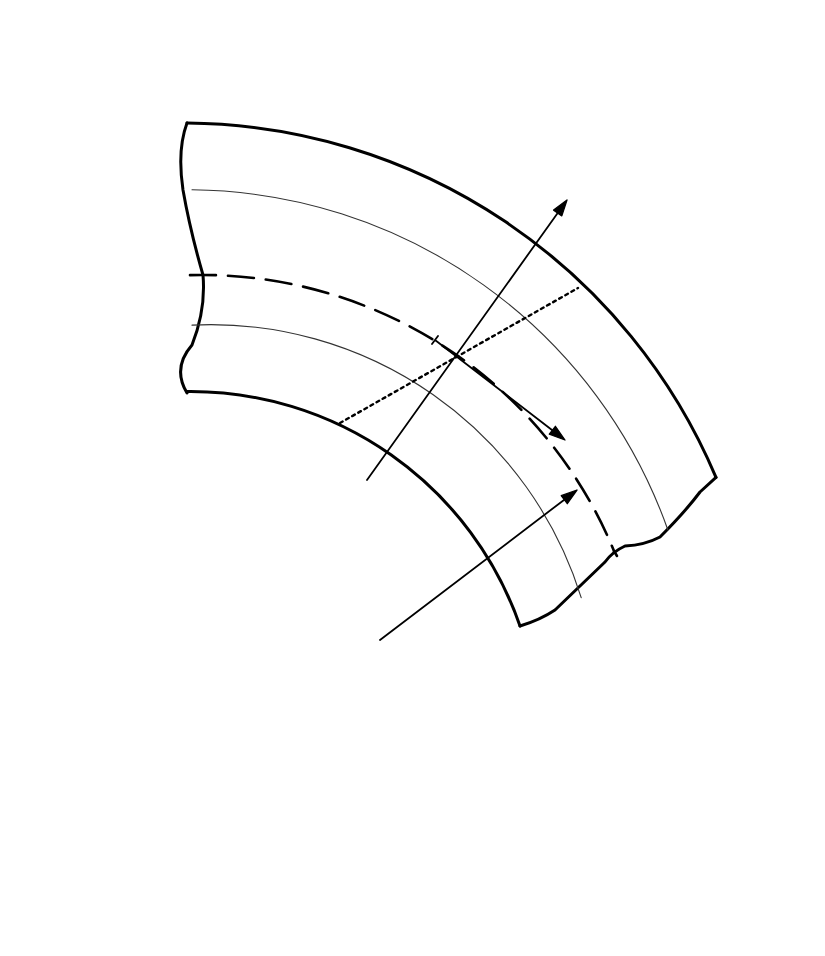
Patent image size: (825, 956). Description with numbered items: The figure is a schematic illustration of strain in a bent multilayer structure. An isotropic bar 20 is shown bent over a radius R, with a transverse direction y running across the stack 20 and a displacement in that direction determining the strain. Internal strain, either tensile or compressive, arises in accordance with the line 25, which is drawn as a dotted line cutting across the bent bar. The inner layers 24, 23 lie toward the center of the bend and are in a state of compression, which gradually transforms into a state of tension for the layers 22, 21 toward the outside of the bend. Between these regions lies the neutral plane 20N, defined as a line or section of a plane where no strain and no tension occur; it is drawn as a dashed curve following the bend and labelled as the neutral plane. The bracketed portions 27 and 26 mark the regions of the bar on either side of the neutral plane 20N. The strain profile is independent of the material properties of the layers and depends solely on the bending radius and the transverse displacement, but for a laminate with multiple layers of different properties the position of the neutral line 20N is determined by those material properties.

The isotropic bar 20 is at (272, 68).
The layer 21 is at (665, 448).
The layer 22 is at (634, 521).
The inner layer 23 is at (590, 562).
The inner layer 24 is at (545, 593).
The line 25 is at (572, 292).
The inner compression portion 26 is at (358, 488).
The outer tension portion 27 is at (188, 265).
The neutral plane 20N is at (320, 293).